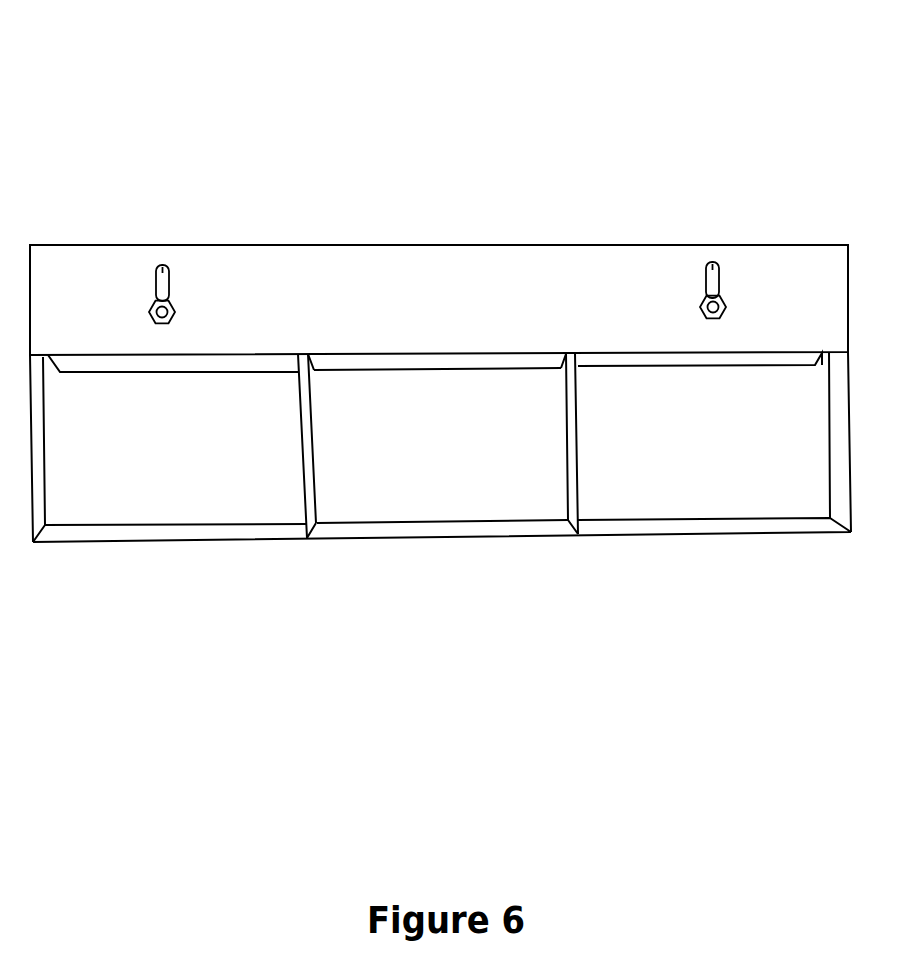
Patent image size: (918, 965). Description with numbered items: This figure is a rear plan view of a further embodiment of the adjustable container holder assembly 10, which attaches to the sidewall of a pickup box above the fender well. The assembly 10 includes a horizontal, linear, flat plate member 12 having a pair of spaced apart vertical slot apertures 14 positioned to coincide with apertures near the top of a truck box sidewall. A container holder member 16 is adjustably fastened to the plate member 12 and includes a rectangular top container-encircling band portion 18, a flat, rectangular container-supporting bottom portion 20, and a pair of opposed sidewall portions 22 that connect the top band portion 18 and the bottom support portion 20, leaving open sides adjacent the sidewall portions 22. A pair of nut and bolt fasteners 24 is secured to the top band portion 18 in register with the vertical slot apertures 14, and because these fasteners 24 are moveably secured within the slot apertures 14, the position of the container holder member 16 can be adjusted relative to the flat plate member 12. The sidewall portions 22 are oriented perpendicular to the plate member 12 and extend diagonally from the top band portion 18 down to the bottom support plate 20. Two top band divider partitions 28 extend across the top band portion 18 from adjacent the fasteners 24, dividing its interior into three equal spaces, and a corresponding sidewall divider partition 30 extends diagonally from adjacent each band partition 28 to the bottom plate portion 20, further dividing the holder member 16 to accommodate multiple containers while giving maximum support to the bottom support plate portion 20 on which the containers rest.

The adjustable container holder assembly 10 is at (166, 68).
The flat plate member 12 is at (435, 272).
The vertical slot apertures 14 is at (160, 263).
The container holder member 16 is at (360, 665).
The top container-encircling band portion 18 is at (138, 362).
The bottom support portion 20 is at (143, 526).
The opposed sidewall portions 22 is at (37, 467).
The nut and bolt fasteners 24 is at (174, 306).
The top band divider partitions 28 is at (310, 357).
The sidewall divider partition 30 is at (308, 477).